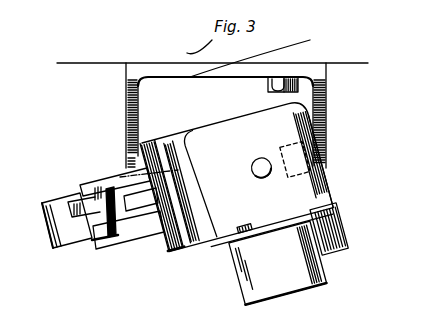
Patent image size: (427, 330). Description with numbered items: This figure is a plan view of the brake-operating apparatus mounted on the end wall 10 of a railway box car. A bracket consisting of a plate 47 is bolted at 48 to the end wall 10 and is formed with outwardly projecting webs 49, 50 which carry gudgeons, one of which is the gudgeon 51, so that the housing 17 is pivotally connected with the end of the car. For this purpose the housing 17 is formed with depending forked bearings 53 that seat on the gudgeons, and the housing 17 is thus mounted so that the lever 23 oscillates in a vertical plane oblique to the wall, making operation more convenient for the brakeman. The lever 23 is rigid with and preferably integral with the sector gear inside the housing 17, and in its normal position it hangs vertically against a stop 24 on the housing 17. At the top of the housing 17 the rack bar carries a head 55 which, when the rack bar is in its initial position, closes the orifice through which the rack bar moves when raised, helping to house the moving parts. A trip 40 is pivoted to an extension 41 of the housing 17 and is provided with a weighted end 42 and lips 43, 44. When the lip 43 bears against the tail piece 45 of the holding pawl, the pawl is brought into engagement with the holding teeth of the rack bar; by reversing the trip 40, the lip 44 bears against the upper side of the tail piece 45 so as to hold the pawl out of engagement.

The end wall 10 is at (84, 65).
The housing 17 is at (239, 224).
The lever 23 is at (323, 282).
The stop 24 is at (341, 246).
The trip 40 is at (88, 238).
The extension 41 is at (92, 183).
The weighted end 42 is at (54, 249).
The lip 43 is at (84, 198).
The lip 44 is at (65, 227).
The tail piece 45 is at (154, 214).
The plate 47 is at (330, 88).
The bolts 48 is at (297, 78).
The web 49 is at (327, 128).
The web 50 is at (126, 114).
The gudgeon 51 is at (322, 155).
The forked bearings 53 is at (322, 168).
The head 55 is at (250, 196).